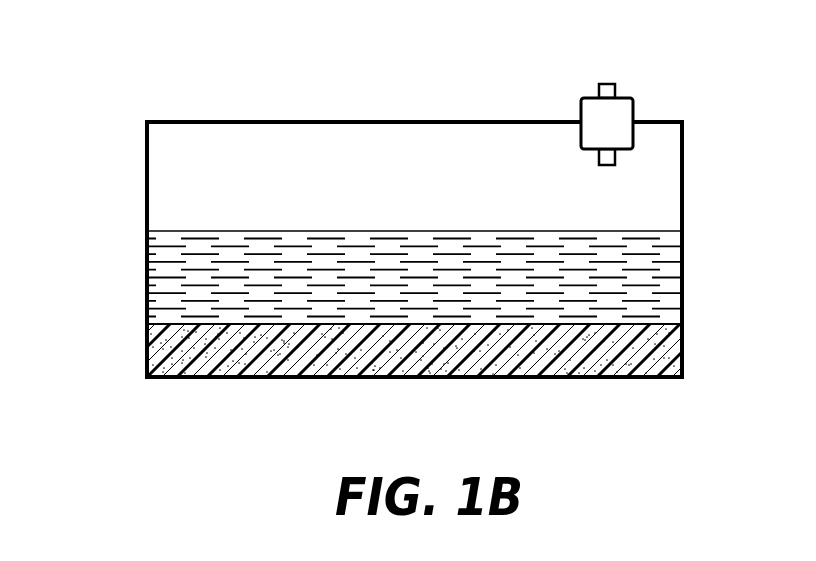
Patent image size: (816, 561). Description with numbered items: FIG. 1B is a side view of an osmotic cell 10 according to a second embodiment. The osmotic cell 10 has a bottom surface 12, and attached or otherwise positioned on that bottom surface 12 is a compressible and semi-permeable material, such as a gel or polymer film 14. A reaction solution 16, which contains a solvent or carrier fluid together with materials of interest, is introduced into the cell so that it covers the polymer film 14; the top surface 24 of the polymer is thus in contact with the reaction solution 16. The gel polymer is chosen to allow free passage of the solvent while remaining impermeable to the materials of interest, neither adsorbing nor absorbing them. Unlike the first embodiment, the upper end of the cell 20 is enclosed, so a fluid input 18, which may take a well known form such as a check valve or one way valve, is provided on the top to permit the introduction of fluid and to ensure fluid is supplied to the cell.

The osmotic cell 10 is at (178, 86).
The bottom surface 12 is at (422, 381).
The polymer film 14 is at (162, 340).
The reaction solution 16 is at (165, 287).
The fluid input 18 is at (618, 103).
The cell 20 is at (147, 171).
The top surface 24 is at (672, 318).